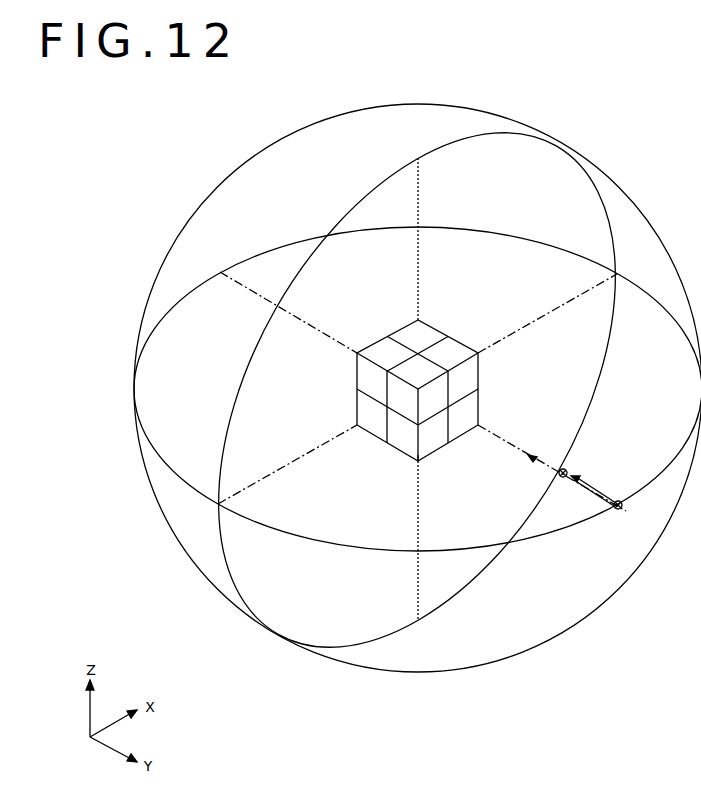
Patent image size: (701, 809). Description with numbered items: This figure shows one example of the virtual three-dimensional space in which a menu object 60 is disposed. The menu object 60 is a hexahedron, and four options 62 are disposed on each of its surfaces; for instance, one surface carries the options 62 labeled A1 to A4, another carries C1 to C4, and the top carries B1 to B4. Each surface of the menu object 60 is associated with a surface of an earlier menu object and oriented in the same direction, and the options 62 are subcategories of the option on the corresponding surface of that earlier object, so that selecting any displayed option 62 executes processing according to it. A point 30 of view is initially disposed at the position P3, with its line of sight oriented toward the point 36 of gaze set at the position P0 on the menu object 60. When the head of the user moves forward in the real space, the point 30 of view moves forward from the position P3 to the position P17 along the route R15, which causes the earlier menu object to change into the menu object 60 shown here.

The menu object 60 is at (349, 395).
The options 62 is at (410, 352).
The point of gaze 36 is at (419, 457).
The point of view 30 is at (558, 474).
The position P0 is at (392, 350).
The position P17 is at (563, 468).
The position P3 is at (617, 501).
The route R15 is at (595, 491).